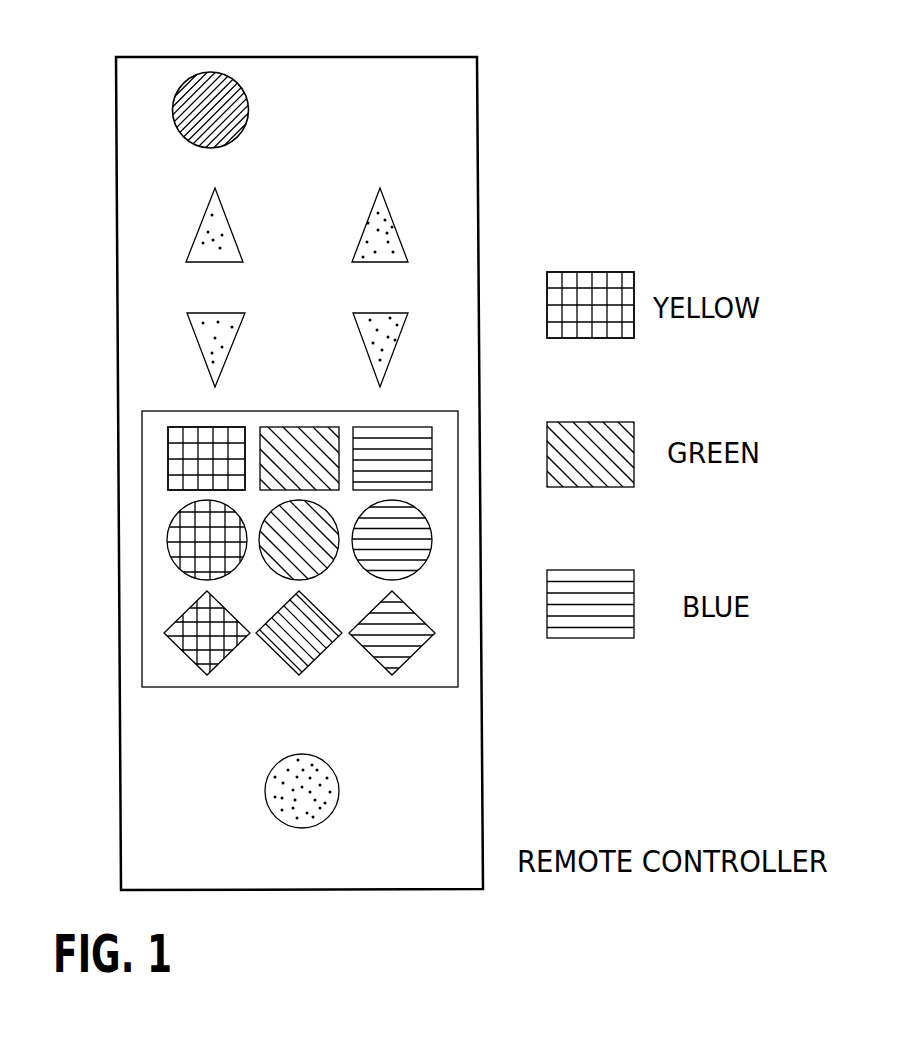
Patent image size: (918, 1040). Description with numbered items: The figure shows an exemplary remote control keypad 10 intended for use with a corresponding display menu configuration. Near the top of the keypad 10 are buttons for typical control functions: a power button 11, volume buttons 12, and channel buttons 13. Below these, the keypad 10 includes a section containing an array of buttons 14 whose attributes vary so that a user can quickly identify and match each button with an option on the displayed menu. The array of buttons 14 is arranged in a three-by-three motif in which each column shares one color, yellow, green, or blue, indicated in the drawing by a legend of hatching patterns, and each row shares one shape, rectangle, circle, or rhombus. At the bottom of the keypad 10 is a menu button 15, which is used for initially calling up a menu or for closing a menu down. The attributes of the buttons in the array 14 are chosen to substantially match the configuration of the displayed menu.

The remote control keypad 10 is at (284, 45).
The power button 11 is at (248, 125).
The volume button 12 is at (275, 236).
The channel button 13 is at (363, 230).
The array of buttons 14 is at (143, 668).
The menu button 15 is at (339, 790).